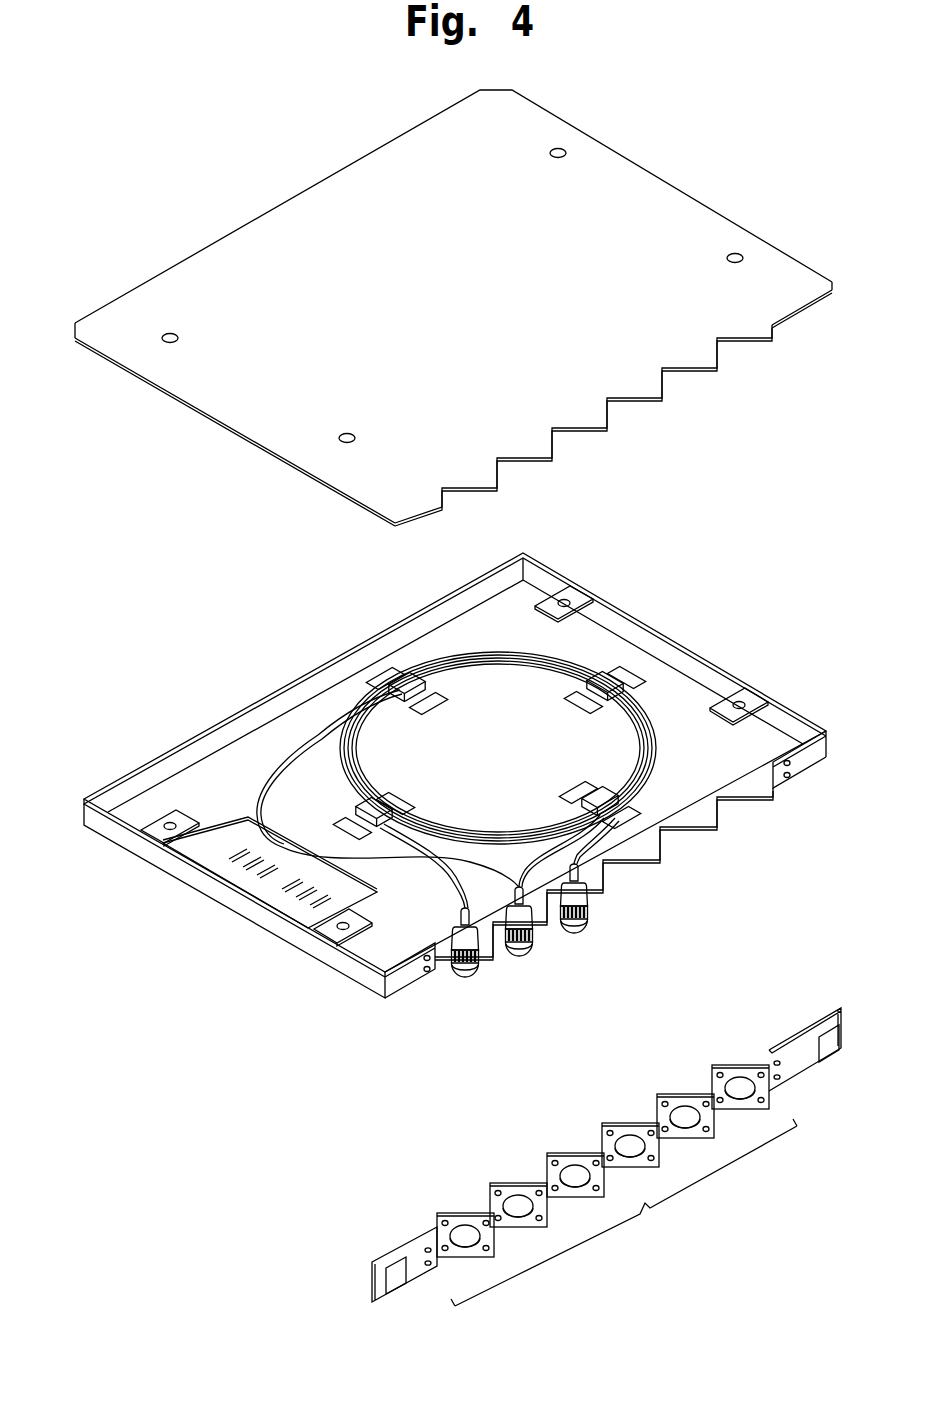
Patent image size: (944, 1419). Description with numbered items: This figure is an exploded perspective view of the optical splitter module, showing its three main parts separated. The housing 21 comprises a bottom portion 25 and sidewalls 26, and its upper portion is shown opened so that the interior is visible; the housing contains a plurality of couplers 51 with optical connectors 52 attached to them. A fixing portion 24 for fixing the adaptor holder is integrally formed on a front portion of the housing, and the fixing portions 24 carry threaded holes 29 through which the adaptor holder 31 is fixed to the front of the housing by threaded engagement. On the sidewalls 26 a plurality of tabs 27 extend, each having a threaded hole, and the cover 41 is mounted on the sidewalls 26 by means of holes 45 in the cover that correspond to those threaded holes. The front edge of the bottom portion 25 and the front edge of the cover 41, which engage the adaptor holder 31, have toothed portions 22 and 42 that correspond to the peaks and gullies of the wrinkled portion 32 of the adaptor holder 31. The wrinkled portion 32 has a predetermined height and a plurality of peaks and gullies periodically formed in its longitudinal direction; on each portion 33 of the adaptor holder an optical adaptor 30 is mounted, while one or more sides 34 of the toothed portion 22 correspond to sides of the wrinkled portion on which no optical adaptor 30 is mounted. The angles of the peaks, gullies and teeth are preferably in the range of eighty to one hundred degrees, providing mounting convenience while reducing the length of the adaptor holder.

The housing 21 is at (645, 613).
The toothed portion 22 is at (789, 826).
The fixing portion 24 is at (805, 760).
The bottom portion 25 is at (459, 774).
The sidewalls 26 is at (692, 650).
The tabs 27 is at (551, 600).
The threaded holes 29 is at (431, 968).
The optical adaptor 30 is at (521, 955).
The adaptor holder 31 is at (797, 1018).
The wrinkled portion 32 is at (624, 1212).
The portion of the adaptor holder 33 is at (455, 1212).
The sides 34 is at (484, 1197).
The cover 41 is at (688, 175).
The toothed portion 42 is at (796, 346).
The holes 45 is at (171, 331).
The couplers 51 is at (280, 876).
The optical connectors 52 is at (473, 935).